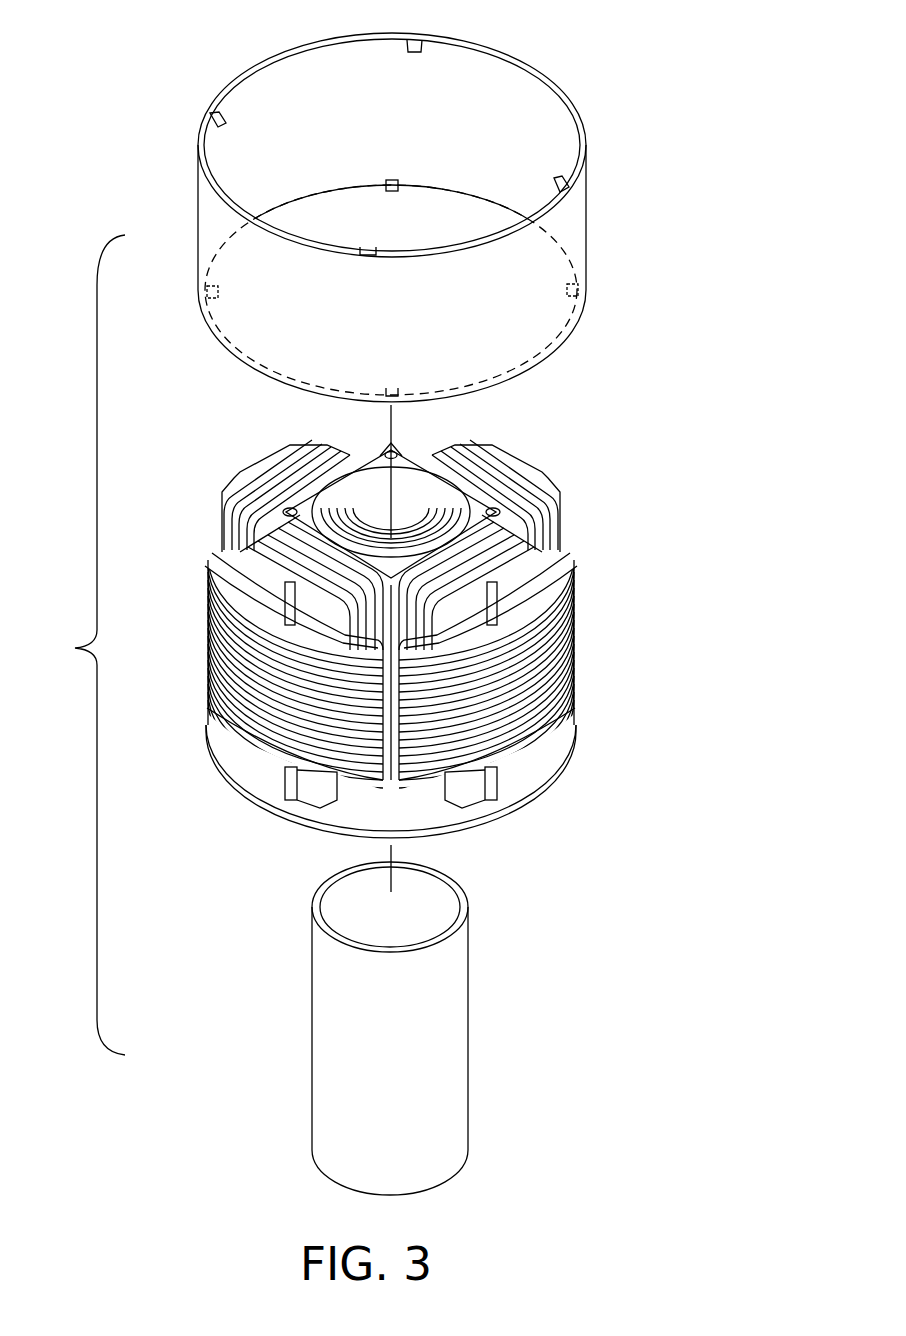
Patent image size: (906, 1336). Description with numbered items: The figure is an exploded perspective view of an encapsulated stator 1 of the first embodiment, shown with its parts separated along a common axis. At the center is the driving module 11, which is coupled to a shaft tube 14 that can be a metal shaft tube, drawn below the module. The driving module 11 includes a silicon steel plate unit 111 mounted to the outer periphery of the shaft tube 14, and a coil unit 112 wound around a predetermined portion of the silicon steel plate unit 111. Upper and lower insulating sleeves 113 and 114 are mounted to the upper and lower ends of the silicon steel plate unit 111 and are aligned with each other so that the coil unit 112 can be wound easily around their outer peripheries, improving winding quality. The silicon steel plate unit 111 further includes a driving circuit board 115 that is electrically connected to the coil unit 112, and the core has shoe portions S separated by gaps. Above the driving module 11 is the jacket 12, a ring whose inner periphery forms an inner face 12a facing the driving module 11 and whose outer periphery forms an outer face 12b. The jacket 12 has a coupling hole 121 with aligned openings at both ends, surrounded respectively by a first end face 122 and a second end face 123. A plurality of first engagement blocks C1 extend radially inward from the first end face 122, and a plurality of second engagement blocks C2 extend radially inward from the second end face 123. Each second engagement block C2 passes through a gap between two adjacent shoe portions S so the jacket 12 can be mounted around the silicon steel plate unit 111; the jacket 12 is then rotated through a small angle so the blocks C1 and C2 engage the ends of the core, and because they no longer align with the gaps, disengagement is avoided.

The encapsulated stator 1 is at (85, 645).
The driving module 11 is at (470, 658).
The silicon steel plate unit 111 is at (548, 648).
The coil unit 112 is at (537, 487).
The upper insulating sleeve 113 is at (540, 571).
The lower insulating sleeve 114 is at (540, 752).
The driving circuit board 115 is at (540, 805).
The shoe portions S is at (540, 690).
The jacket 12 is at (442, 218).
The inner face 12a is at (567, 153).
The outer face 12b is at (575, 213).
The coupling hole 121 is at (519, 107).
The first end face 122 is at (255, 68).
The second end face 123 is at (545, 355).
The first engagement blocks C1 is at (362, 247).
The second engagement blocks C2 is at (390, 392).
The shaft tube 14 is at (453, 980).